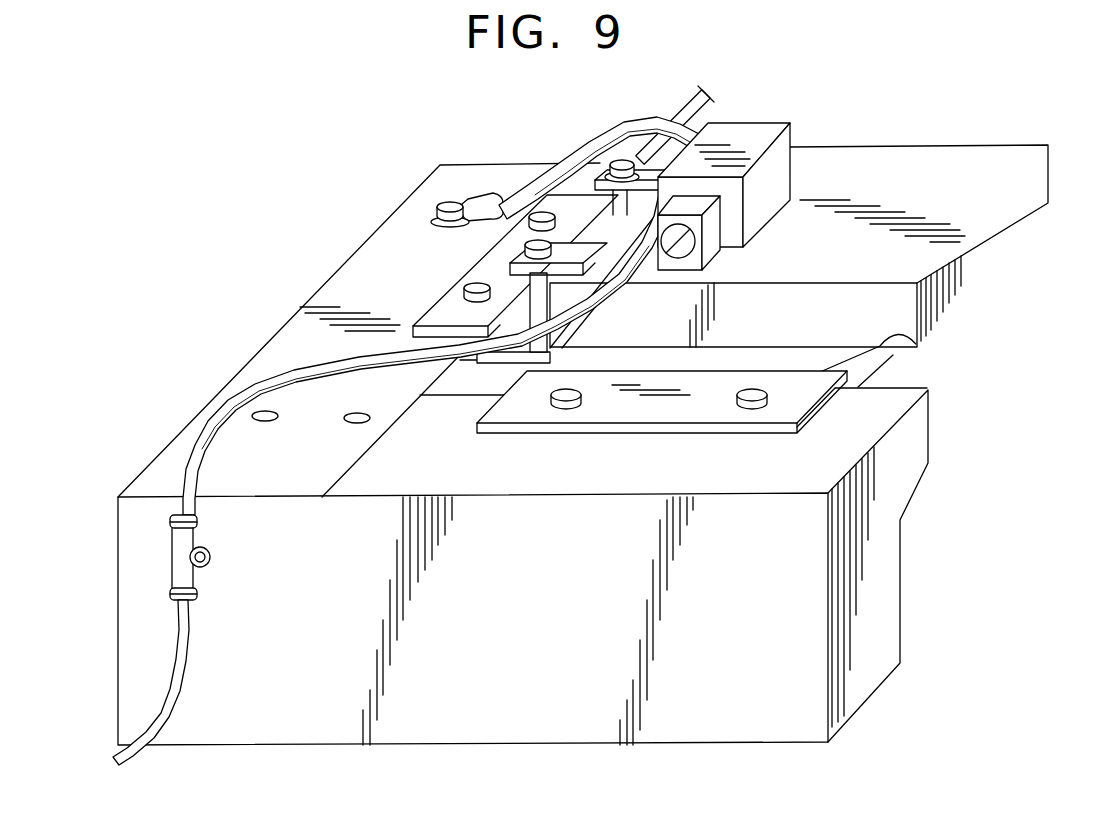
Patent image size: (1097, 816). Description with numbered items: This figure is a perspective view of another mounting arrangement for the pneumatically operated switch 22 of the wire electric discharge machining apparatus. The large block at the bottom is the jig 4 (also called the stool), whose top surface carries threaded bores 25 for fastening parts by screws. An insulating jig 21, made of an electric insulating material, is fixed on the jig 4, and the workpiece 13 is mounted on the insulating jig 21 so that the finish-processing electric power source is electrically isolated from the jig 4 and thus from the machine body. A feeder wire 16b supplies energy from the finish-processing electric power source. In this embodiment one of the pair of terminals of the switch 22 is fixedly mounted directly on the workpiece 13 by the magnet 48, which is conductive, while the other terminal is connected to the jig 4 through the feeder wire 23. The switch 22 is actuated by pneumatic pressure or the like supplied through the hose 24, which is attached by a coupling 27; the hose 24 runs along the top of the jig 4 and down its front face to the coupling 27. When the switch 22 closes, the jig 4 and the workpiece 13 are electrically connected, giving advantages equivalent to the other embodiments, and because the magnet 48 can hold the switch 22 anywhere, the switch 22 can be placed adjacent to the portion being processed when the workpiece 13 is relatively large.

The jig 4 is at (395, 213).
The workpiece 13 is at (983, 257).
The feeder wire 16b is at (708, 102).
The insulating jig 21 is at (920, 337).
The switch 22 is at (783, 173).
The feeder wire 23 is at (573, 145).
The hose 24 is at (303, 371).
The threaded bores 25 is at (272, 421).
The coupling 27 is at (193, 577).
The magnet 48 is at (710, 250).